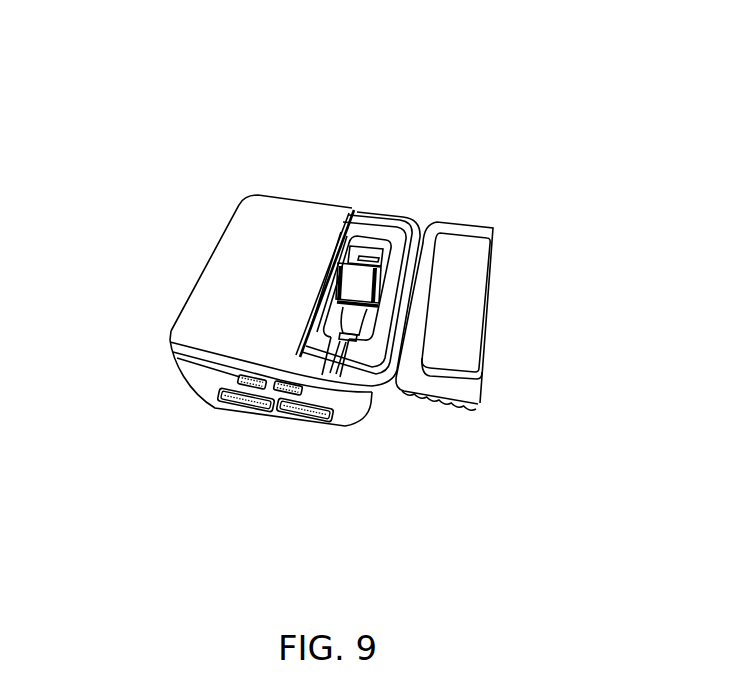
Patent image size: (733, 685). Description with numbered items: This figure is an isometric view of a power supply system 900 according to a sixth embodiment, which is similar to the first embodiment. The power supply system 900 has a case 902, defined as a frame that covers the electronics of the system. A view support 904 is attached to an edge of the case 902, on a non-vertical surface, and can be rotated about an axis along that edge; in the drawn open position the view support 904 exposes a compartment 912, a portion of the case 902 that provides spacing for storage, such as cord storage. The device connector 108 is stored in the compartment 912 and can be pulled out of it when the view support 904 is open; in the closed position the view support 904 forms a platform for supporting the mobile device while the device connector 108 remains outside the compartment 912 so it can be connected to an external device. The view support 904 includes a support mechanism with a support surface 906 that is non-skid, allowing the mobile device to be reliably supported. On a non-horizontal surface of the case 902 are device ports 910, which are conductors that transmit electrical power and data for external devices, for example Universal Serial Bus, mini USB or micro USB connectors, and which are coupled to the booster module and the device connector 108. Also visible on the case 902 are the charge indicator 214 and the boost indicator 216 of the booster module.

The power supply system 900 is at (180, 117).
The case 902 is at (185, 396).
The view support 904 is at (505, 287).
The support surface 906 is at (450, 420).
The device connector 108 is at (360, 283).
The compartment 912 is at (355, 364).
The charge indicator 214 is at (242, 363).
The boost indicator 216 is at (281, 368).
The device ports 910 is at (299, 433).